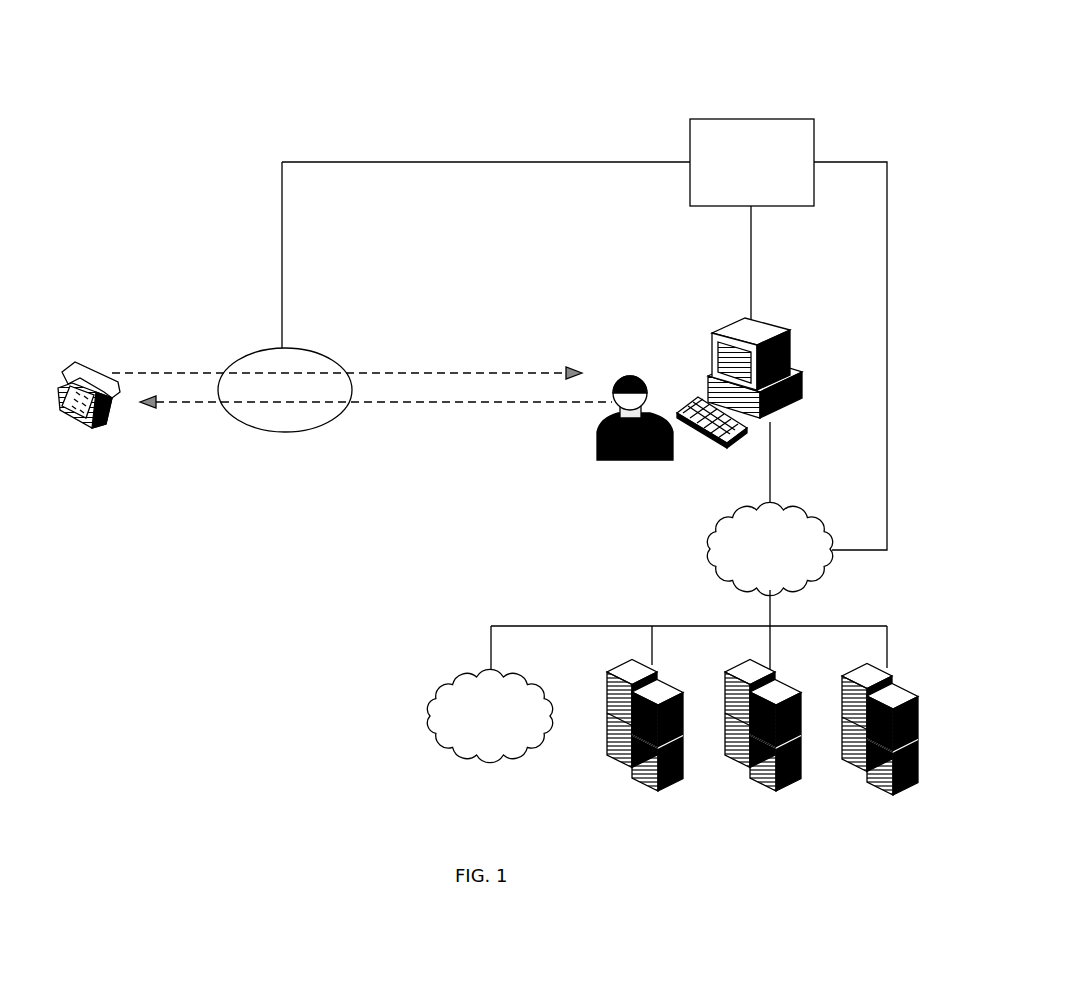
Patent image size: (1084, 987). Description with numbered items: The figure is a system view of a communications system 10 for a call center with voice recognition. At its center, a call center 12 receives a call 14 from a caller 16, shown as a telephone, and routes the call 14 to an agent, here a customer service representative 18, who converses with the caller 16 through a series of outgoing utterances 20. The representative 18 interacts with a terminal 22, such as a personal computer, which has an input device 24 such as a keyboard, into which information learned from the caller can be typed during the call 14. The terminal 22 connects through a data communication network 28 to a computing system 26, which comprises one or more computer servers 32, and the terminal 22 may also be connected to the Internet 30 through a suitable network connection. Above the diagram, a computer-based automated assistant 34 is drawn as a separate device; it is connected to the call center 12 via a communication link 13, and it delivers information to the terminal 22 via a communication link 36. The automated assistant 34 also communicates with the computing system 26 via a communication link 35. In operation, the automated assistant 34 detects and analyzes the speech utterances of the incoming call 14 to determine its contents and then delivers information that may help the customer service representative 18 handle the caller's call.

The communications system 10 is at (534, 34).
The call center 12 is at (315, 349).
The communication link 13 is at (455, 162).
The call 14 is at (175, 373).
The caller 16 is at (98, 365).
The customer service representative 18 is at (600, 447).
The outgoing utterances 20 is at (190, 403).
The terminal 22 is at (785, 338).
The input device 24 is at (718, 445).
The computing system 26 is at (727, 836).
The data communication network 28 is at (800, 516).
The Internet 30 is at (430, 694).
The computer servers 32 is at (668, 672).
The automated assistant 34 is at (762, 118).
The communication link 35 is at (887, 340).
The communication link 36 is at (752, 268).